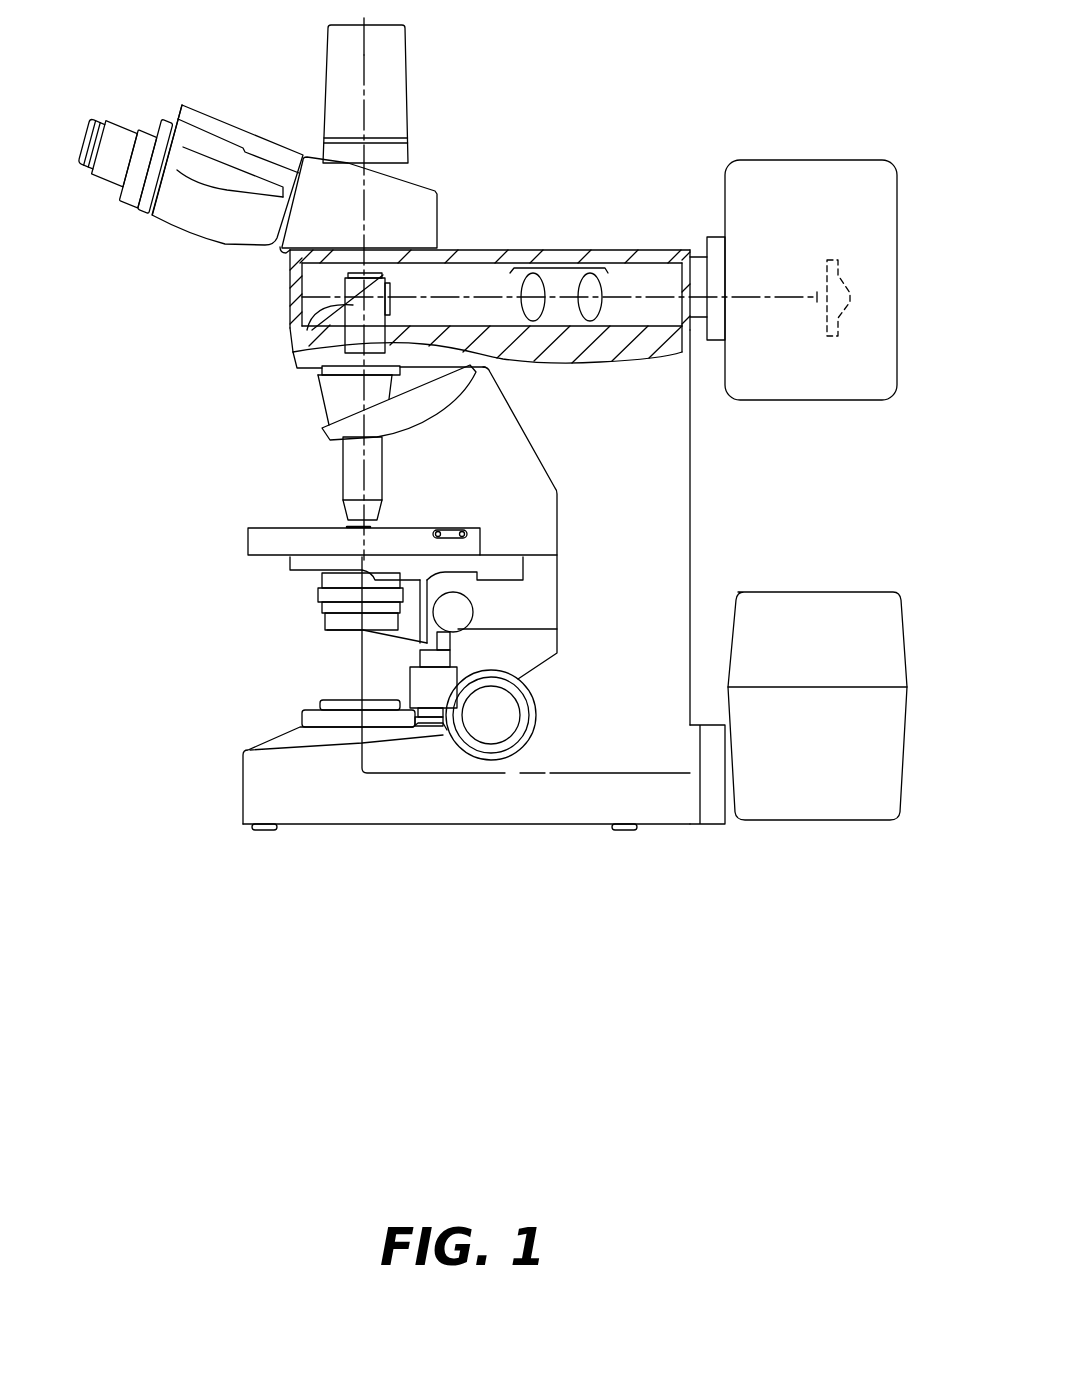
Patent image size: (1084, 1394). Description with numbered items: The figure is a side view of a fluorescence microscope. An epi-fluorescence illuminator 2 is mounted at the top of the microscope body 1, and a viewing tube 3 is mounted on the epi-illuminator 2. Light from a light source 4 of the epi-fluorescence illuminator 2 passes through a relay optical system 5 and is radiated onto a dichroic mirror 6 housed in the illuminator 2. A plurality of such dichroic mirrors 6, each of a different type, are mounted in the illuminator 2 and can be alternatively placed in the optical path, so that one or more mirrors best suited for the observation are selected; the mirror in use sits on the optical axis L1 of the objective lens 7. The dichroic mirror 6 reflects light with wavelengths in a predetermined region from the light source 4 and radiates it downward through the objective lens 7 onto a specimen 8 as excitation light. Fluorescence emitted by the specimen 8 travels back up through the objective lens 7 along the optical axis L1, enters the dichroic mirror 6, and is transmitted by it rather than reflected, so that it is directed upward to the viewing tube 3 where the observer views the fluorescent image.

The microscope body 1 is at (690, 520).
The epi-fluorescence illuminator 2 is at (682, 248).
The viewing tube 3 is at (275, 147).
The light source 4 is at (840, 323).
The relay optical system 5 is at (557, 267).
The dichroic mirror 6 is at (302, 337).
The objective lens 7 is at (340, 472).
The specimen 8 is at (347, 525).
The optical axis L1 is at (363, 463).